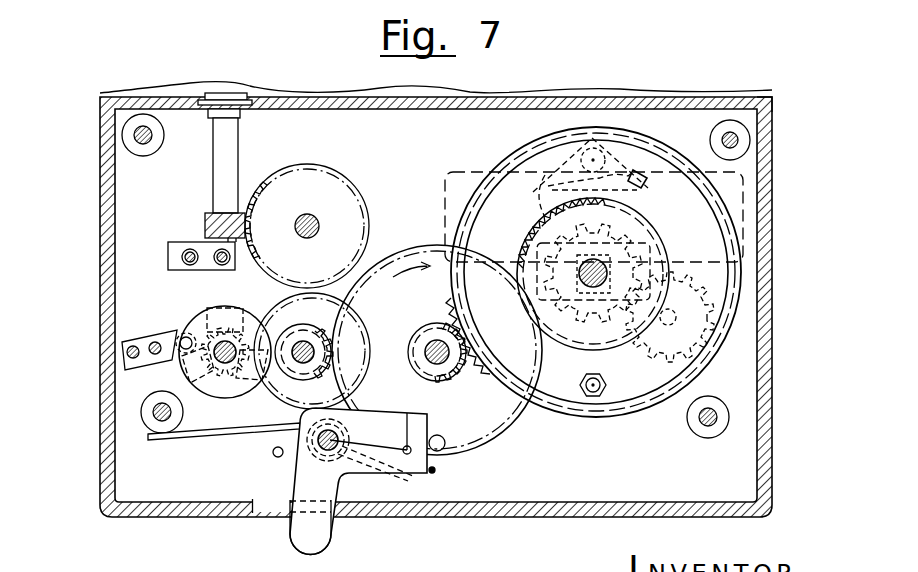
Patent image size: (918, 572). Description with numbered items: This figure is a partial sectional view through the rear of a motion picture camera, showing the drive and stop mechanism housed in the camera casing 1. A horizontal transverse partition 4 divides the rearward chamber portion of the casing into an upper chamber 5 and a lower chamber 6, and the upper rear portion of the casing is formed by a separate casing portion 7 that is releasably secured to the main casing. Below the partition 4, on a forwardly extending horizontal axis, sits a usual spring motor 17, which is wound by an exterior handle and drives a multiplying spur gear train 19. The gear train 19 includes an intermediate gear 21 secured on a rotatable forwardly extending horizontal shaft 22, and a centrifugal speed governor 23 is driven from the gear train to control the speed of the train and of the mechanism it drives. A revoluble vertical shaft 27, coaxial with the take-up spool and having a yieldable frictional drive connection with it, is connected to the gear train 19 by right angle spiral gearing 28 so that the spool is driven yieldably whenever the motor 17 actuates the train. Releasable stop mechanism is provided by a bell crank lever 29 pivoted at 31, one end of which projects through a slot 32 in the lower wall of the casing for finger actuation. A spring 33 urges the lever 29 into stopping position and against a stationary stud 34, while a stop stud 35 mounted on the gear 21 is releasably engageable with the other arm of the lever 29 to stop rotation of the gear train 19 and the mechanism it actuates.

The camera casing 1 is at (100, 190).
The horizontal transverse partition 4 is at (290, 106).
The upper chamber 5 is at (257, 97).
The lower chamber 6 is at (120, 287).
The separate casing portion 7 is at (770, 97).
The spring motor 17 is at (745, 280).
The multiplying spur gear train 19 is at (268, 304).
The intermediate gear 21 is at (428, 246).
The horizontal shaft 22 is at (436, 344).
The centrifugal speed governor 23 is at (200, 318).
The revoluble vertical shaft 27 is at (218, 167).
The right angle spiral gearing 28 is at (205, 228).
The bell crank lever 29 is at (296, 468).
The pivot 31 is at (334, 438).
The slot 32 is at (275, 503).
The spring 33 is at (218, 440).
The stationary stud 34 is at (436, 472).
The stop stud 35 is at (444, 440).